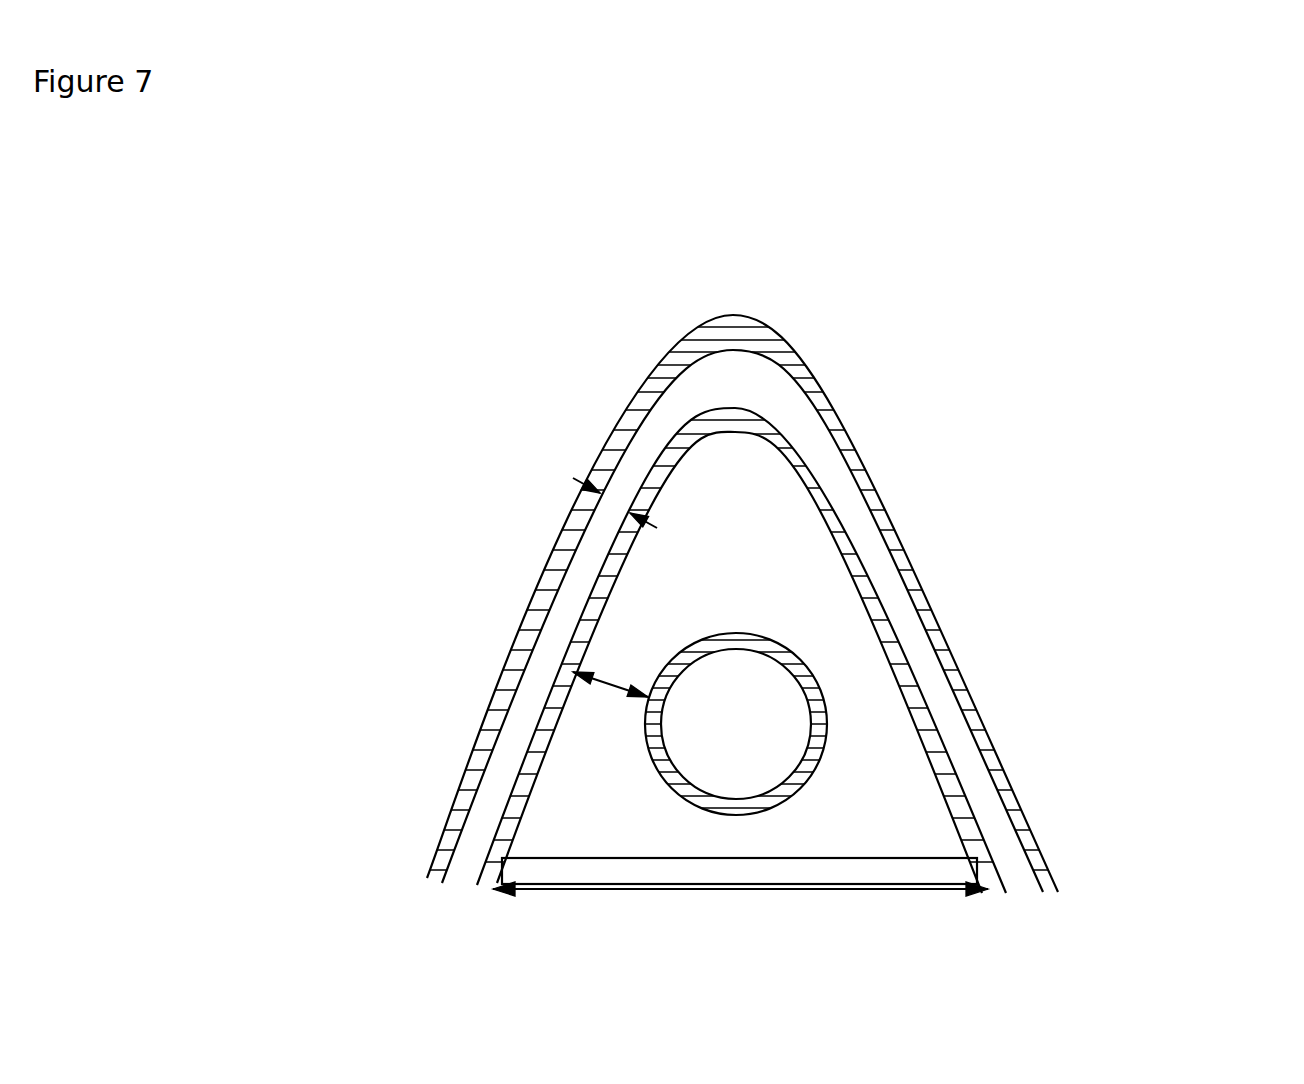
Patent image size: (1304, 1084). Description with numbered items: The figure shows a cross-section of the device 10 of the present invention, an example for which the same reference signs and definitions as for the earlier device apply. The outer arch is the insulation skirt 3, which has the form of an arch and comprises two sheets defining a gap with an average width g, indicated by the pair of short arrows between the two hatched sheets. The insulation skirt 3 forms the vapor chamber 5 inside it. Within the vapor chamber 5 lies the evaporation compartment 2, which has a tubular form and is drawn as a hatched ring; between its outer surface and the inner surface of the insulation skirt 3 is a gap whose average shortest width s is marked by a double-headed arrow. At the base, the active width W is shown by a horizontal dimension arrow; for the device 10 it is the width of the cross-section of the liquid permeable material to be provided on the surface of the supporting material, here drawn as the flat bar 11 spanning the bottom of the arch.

The device 10 is at (600, 394).
The insulation skirt 3 is at (787, 453).
The vapor chamber 5 is at (805, 580).
The evaporation compartment 2 is at (818, 702).
The base bar 11 is at (843, 880).
The average shortest width s is at (608, 705).
The average width of the gap g is at (615, 503).
The active width W is at (740, 917).